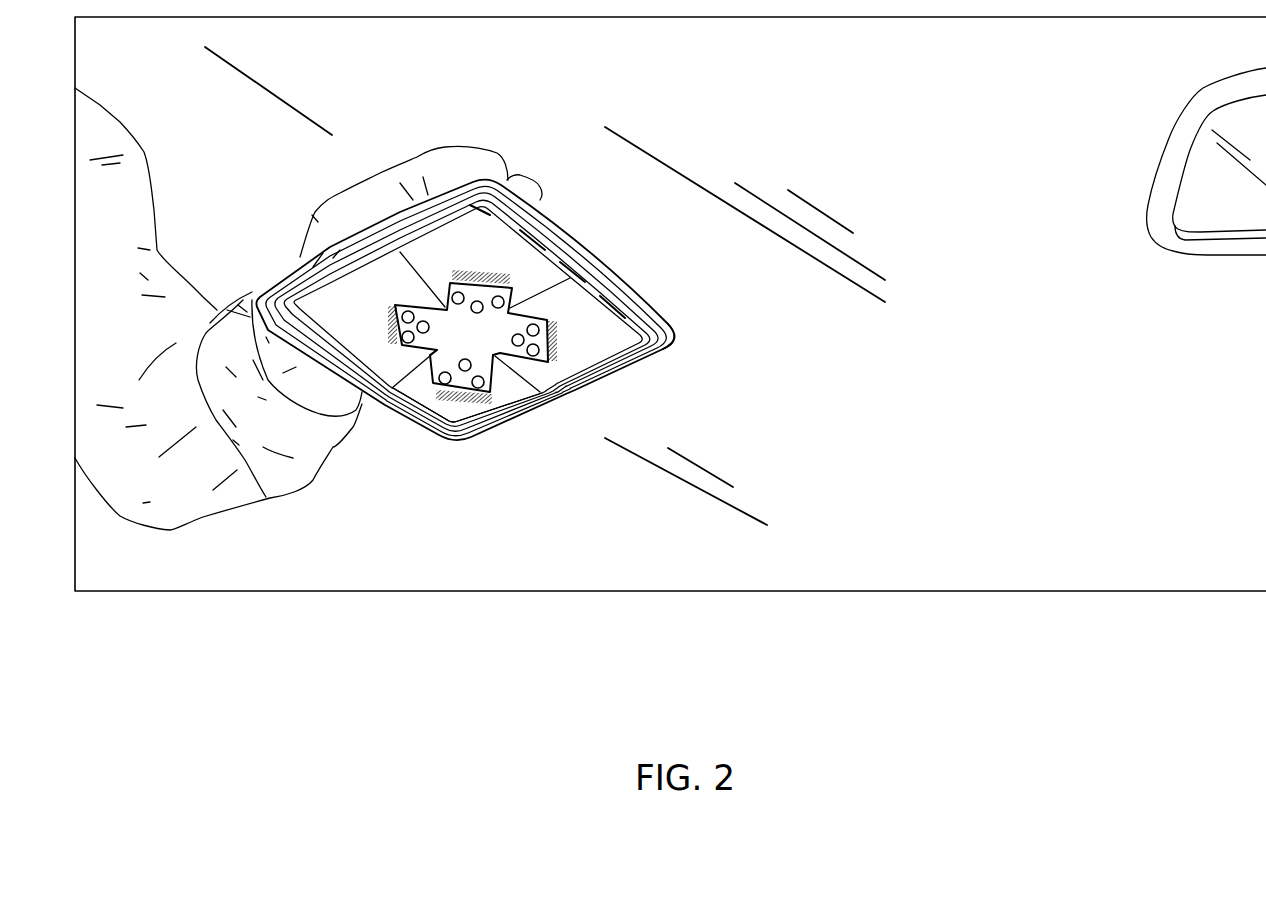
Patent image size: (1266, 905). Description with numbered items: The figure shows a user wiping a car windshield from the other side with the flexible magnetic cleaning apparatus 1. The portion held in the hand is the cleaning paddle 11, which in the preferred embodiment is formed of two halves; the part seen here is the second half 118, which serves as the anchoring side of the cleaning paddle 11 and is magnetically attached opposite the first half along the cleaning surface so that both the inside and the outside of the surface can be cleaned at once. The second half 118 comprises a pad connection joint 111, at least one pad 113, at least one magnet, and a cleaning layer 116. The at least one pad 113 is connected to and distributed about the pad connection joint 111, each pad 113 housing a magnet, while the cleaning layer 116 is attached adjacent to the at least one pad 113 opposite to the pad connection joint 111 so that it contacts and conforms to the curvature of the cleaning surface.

The flexible magnetic cleaning apparatus 1 is at (800, 367).
The cleaning paddle 11 is at (726, 308).
The pad connection joint 111 is at (444, 285).
The pad 113 is at (455, 420).
The cleaning layer 116 is at (588, 254).
The second half 118 is at (684, 347).